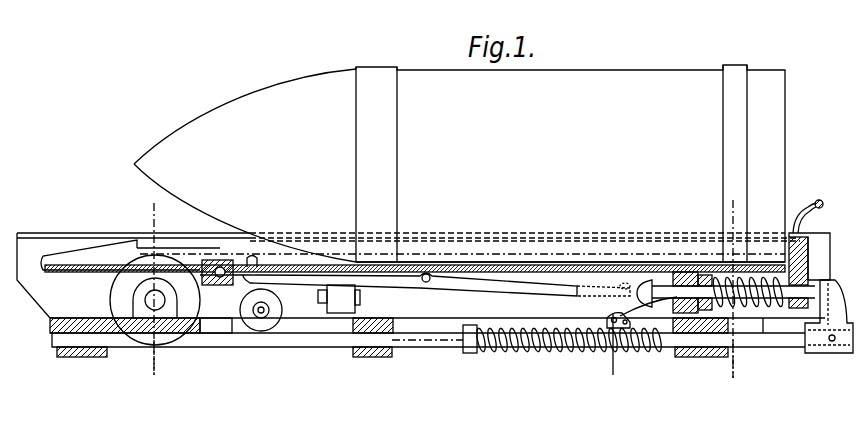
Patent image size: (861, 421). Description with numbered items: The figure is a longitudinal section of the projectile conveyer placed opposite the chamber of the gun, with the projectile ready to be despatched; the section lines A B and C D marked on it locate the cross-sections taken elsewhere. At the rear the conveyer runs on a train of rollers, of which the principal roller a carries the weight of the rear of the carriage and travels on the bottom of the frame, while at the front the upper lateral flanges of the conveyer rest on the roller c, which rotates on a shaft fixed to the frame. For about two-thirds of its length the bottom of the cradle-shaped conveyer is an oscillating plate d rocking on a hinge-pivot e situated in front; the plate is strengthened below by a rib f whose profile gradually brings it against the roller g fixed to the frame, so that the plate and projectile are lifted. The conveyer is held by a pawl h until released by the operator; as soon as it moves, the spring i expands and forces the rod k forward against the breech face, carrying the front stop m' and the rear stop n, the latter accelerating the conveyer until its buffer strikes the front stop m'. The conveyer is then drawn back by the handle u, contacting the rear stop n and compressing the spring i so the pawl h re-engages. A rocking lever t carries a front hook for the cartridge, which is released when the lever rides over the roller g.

The section line A B A is at (144, 289).
The section line A B is at (143, 357).
The section line C D C is at (724, 286).
The section line C D is at (720, 361).
The roller c is at (155, 300).
The rocking lever t is at (282, 275).
The hinge-pivot e is at (222, 268).
The roller g is at (248, 305).
The front stop m' is at (321, 307).
The rib f is at (500, 280).
The oscillating plate d is at (450, 268).
The spring i is at (563, 348).
The rod k is at (420, 340).
The pawl h is at (613, 369).
The principal roller a is at (740, 308).
The handle u is at (823, 204).
The rear stop n is at (837, 293).